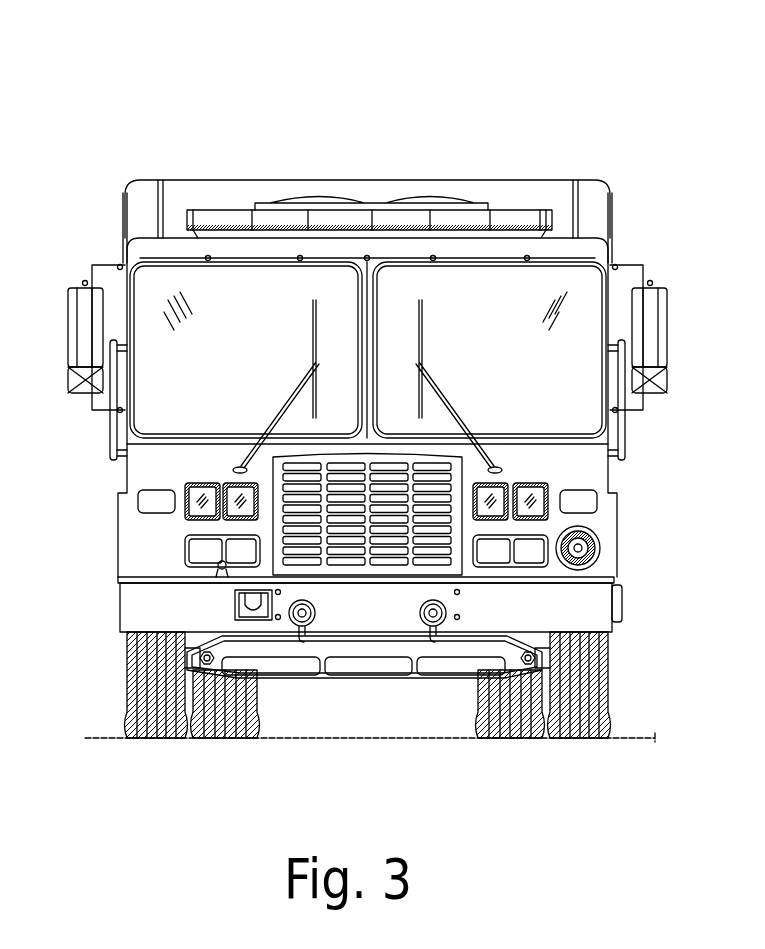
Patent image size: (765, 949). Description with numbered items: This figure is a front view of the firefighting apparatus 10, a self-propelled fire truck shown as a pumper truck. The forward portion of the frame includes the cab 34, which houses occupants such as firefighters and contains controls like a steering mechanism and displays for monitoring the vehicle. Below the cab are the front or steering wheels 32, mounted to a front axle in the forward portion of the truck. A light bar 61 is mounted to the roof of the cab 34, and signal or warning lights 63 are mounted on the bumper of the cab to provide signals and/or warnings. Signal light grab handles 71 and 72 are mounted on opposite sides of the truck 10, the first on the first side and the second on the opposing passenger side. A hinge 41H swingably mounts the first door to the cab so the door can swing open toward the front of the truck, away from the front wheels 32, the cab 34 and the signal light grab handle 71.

The firefighting apparatus 10 is at (148, 55).
The front wheels 32 is at (258, 728).
The cab 34 is at (600, 247).
The hinge 41H is at (524, 562).
The light bar 61 is at (505, 210).
The signal or warning lights 63 is at (623, 599).
The signal light grab handle 71 is at (628, 432).
The signal light grab handle 72 is at (112, 434).